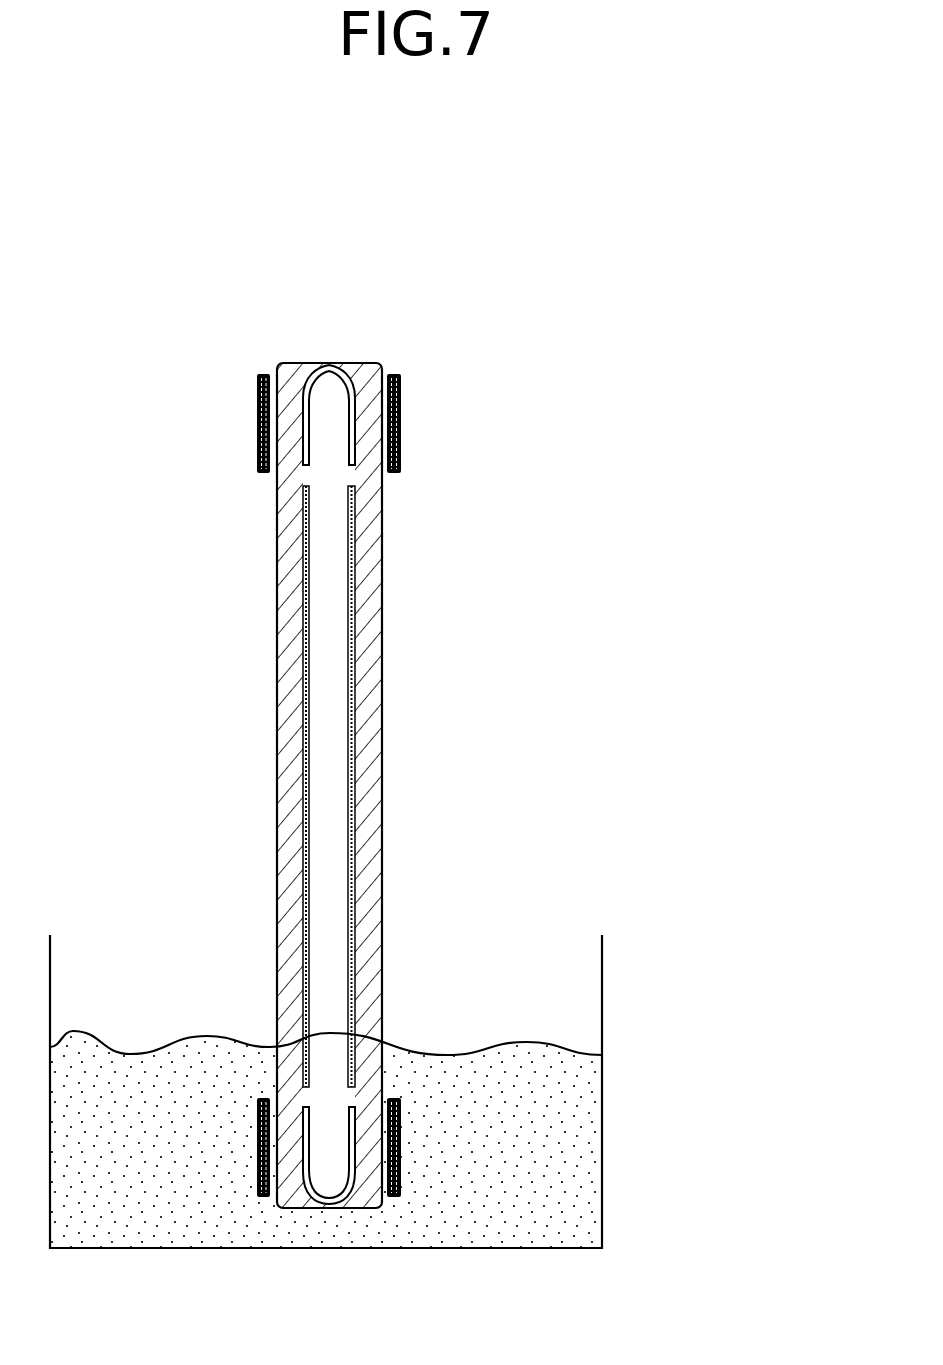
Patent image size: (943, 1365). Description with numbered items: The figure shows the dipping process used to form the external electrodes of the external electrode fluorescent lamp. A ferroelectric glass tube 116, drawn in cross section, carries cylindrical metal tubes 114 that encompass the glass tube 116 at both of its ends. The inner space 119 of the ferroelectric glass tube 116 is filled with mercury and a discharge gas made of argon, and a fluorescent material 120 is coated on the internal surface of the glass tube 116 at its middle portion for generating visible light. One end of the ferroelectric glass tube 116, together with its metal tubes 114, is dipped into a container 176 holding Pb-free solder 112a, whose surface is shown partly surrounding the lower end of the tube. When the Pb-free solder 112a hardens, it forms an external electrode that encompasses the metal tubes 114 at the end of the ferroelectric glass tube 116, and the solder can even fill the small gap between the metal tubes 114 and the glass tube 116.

The cylindrical metal tubes 114 is at (401, 403).
The ferroelectric glass tube 116 is at (383, 636).
The inner space 119 is at (337, 993).
The fluorescent material 120 is at (352, 526).
The Pb-free solder 112a is at (522, 1042).
The container 176 is at (602, 1183).